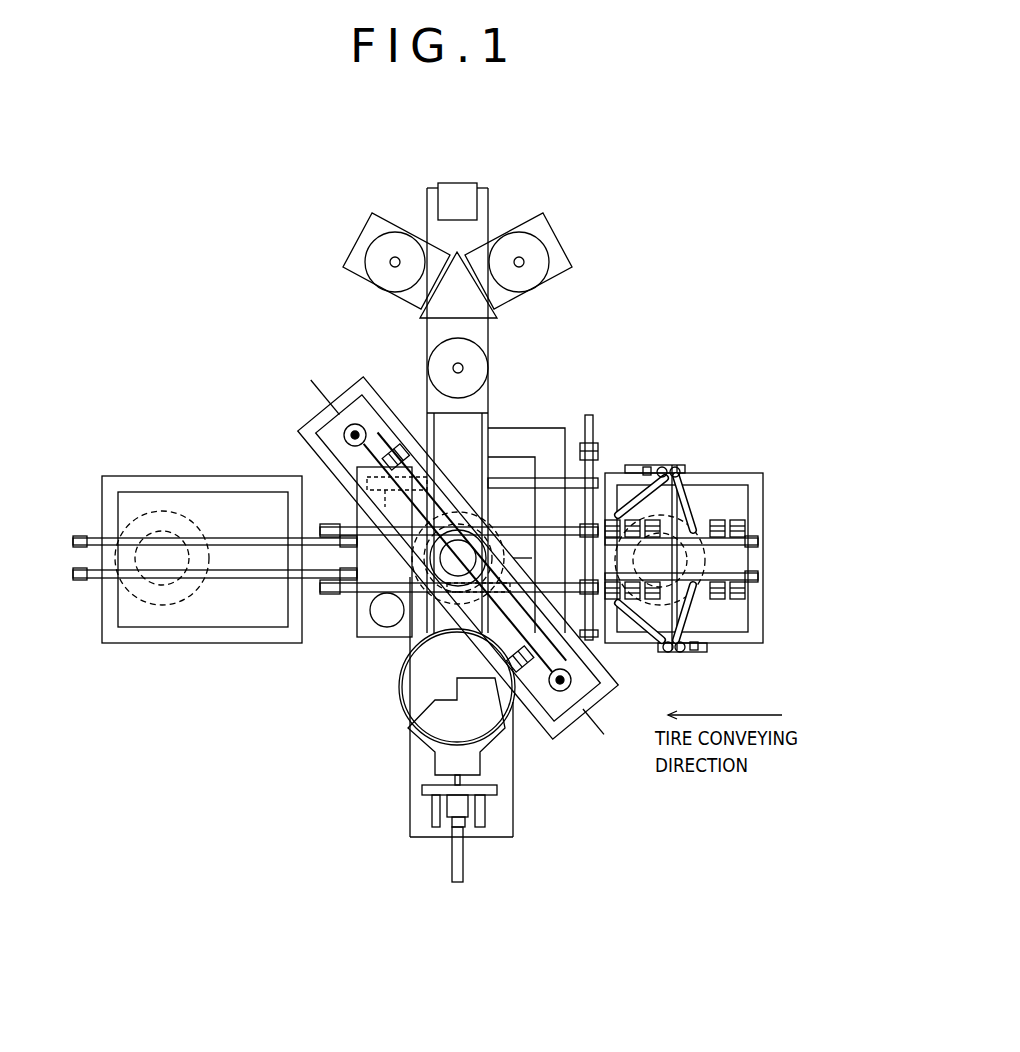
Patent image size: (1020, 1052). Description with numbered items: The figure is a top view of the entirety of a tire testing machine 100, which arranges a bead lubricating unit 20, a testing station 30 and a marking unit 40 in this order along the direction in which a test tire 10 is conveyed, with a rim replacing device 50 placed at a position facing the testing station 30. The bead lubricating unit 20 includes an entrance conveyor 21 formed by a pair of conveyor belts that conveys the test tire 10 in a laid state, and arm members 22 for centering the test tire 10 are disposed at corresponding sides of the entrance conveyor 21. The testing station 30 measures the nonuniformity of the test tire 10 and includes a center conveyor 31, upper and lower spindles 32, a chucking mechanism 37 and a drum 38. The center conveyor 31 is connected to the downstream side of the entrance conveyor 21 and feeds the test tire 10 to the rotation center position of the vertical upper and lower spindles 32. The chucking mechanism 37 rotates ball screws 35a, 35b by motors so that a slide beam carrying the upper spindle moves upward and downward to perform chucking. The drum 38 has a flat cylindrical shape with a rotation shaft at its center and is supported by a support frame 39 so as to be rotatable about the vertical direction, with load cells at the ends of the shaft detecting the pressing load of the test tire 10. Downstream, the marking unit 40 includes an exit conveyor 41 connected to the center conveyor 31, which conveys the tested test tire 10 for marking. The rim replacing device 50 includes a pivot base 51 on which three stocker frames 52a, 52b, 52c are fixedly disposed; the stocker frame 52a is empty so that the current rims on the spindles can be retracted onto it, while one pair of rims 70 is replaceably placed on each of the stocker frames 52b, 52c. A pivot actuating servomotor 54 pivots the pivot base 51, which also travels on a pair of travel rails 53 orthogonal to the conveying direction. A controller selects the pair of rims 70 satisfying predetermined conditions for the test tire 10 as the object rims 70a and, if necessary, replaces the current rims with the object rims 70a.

The tire testing machine 100 is at (690, 300).
The test tire 10 is at (150, 605).
The bead lubricating unit 20 is at (715, 462).
The entrance conveyor 21 is at (735, 530).
The arm members 22 is at (650, 478).
The testing station 30 is at (355, 652).
The center conveyor 31 is at (352, 597).
The upper and lower spindles 32 is at (408, 622).
The ball screw 35a is at (557, 692).
The ball screw 35b is at (344, 437).
The chucking mechanism 37 is at (615, 745).
The drum 38 is at (400, 722).
The support frame 39 is at (478, 768).
The marking unit 40 is at (172, 462).
The exit conveyor 41 is at (227, 545).
The rim replacing device 50 is at (550, 176).
The pivot base 51 is at (438, 303).
The stocker frame 52a is at (426, 345).
The stocker frame 52b is at (393, 222).
The stocker frame 52c is at (563, 242).
The travel rails 53 is at (455, 432).
The pivot actuating servomotor 54 is at (450, 183).
The rims 70 is at (372, 258).
The object rims 70a is at (478, 520).